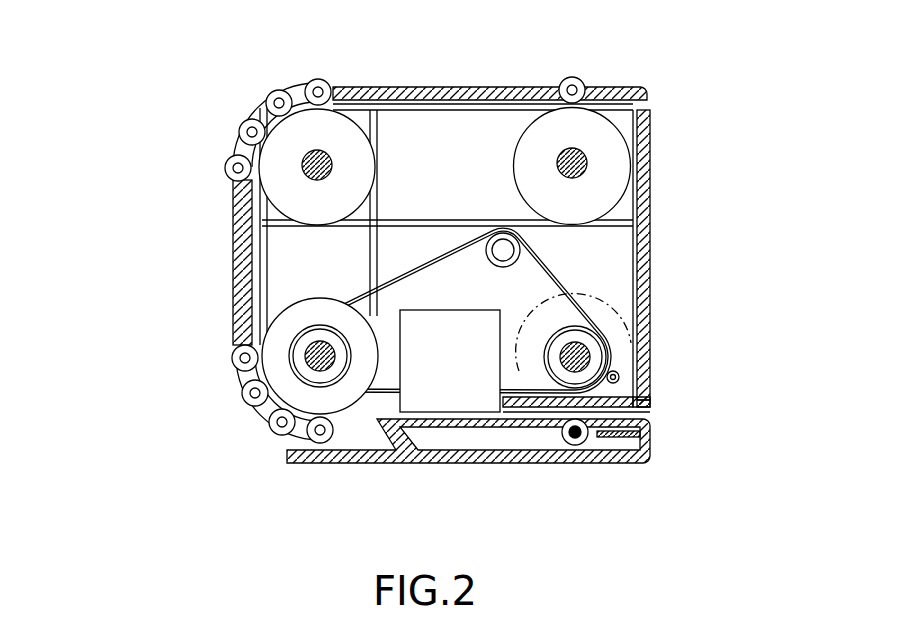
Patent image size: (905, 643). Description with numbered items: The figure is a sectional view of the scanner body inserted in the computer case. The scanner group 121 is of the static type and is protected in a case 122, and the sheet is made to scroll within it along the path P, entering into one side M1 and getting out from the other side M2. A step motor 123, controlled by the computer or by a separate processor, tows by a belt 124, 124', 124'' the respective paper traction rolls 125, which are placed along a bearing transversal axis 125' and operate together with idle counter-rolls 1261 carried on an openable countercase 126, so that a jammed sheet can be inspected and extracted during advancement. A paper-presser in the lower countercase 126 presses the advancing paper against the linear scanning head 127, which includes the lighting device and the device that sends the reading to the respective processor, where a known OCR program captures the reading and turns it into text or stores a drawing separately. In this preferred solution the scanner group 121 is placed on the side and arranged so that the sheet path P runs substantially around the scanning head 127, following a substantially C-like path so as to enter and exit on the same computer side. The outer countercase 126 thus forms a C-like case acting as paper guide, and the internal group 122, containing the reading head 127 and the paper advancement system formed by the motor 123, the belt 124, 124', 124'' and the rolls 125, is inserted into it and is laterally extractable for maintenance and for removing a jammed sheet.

The scanner group 121 is at (532, 76).
The case 122 is at (650, 127).
The motor 123 is at (520, 243).
The belt 124 is at (349, 218).
The belt 124' is at (344, 262).
The belt 124'' is at (483, 63).
The paper traction rolls 125 is at (408, 215).
The bearing transversal axis 125' is at (411, 270).
The countercase 126 is at (647, 465).
The scanning head 127 is at (433, 413).
The idle counter-rolls 1261 is at (247, 120).
The sheet entering side M1 is at (645, 417).
The sheet exiting side M2 is at (618, 103).
The sheet path P is at (377, 413).